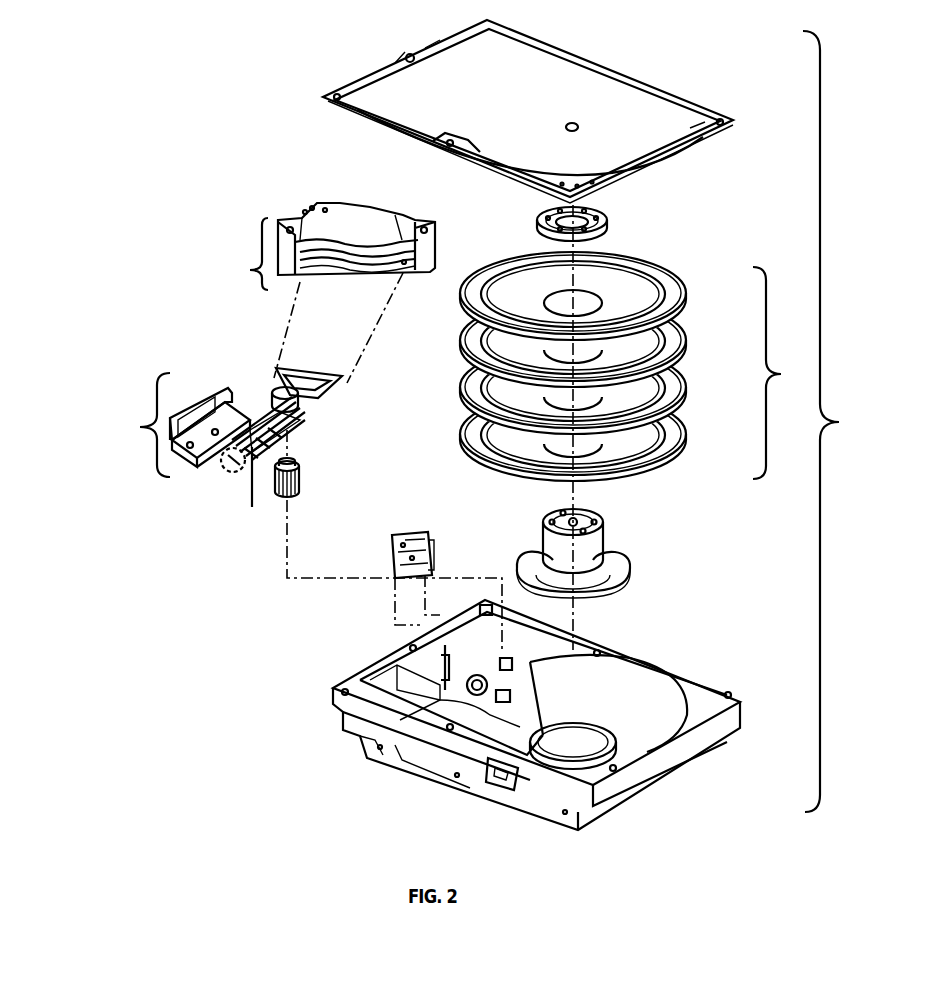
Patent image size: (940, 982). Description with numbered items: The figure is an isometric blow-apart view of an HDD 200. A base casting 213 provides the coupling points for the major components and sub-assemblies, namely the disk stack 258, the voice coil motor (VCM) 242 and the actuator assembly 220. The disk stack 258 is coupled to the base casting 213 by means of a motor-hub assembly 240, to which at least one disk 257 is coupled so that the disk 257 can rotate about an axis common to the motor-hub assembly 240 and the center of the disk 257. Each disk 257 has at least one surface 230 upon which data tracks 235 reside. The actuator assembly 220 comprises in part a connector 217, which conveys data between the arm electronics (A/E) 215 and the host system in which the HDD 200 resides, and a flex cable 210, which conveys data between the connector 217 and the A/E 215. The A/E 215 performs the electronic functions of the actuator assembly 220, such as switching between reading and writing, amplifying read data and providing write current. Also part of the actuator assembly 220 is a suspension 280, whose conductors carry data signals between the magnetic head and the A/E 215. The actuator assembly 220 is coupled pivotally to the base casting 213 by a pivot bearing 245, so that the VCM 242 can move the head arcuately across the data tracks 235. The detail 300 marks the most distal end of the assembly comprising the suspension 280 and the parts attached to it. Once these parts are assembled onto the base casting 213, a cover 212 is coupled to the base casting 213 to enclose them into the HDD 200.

The HDD 200 is at (850, 414).
The cover 212 is at (596, 96).
The base casting 213 is at (347, 713).
The flex cable 210 is at (207, 345).
The arm electronics (A/E) 215 is at (260, 383).
The connector 217 is at (203, 433).
The actuator assembly 220 is at (161, 388).
The surface 230 is at (663, 443).
The data tracks 235 is at (512, 272).
The motor-hub assembly 240 is at (607, 577).
The voice coil motor (VCM) 242 is at (322, 246).
The pivot bearing 245 is at (273, 493).
The disk 257 is at (458, 303).
The disk stack 258 is at (781, 374).
The suspension 280 is at (252, 507).
The detail 300 is at (227, 470).